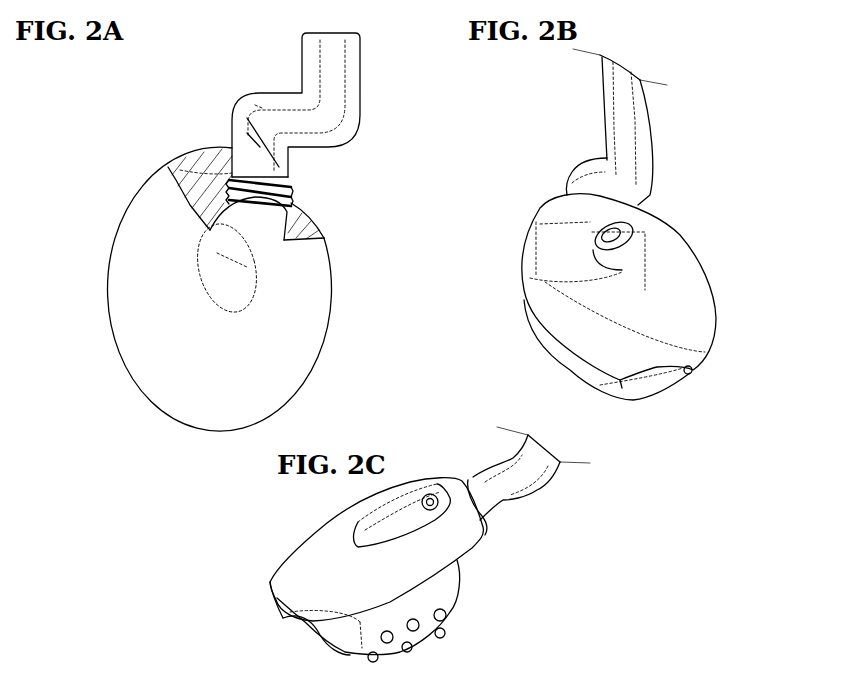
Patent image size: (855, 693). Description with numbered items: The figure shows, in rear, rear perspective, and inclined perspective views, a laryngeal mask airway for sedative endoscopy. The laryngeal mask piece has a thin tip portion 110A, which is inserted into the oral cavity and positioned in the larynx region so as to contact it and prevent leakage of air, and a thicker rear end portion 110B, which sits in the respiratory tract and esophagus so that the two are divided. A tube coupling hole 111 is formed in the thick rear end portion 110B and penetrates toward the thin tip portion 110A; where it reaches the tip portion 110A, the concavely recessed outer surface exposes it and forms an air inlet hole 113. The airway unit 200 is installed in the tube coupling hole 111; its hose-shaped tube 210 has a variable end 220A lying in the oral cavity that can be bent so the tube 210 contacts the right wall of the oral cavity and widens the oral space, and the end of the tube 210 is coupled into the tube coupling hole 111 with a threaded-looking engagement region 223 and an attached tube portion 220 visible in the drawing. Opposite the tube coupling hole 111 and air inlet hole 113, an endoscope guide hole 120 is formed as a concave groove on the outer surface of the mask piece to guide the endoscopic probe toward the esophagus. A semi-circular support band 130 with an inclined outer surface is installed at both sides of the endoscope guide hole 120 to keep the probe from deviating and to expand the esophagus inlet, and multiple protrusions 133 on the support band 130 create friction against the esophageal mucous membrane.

In FIG. 2A, the tip portion 110A is at (215, 431).
In FIG. 2B, the tip portion 110A is at (705, 362).
In FIG. 2C, the tip portion 110A is at (268, 603).
In FIG. 2A, the rear end portion 110B is at (197, 153).
In FIG. 2B, the rear end portion 110B is at (536, 222).
In FIG. 2C, the rear end portion 110B is at (473, 528).
In FIG. 2A, the tube coupling hole 111 is at (173, 165).
In FIG. 2C, the tube coupling hole 111 is at (363, 530).
In FIG. 2A, the air inlet hole 113 is at (253, 250).
In FIG. 2B, the air inlet hole 113 is at (528, 277).
In FIG. 2B, the endoscope guide hole 120 is at (660, 390).
In FIG. 2C, the endoscope guide hole 120 is at (305, 622).
In FIG. 2B, the support band 130 is at (547, 345).
In FIG. 2C, the support band 130 is at (457, 583).
In FIG. 2C, the protrusions 133 is at (410, 647).
In FIG. 2A, the airway unit 200 is at (283, 50).
In FIG. 2C, the airway unit 200 is at (484, 447).
In FIG. 2A, the tube 210 is at (232, 120).
In FIG. 2B, the tube 210 is at (567, 190).
In FIG. 2C, the tube 210 is at (468, 480).
In FIG. 2B, the tube 220 is at (603, 140).
In FIG. 2C, the tube 220 is at (560, 462).
In FIG. 2A, the variable end 220A is at (243, 103).
In FIG. 2A, the thread 223 is at (290, 182).